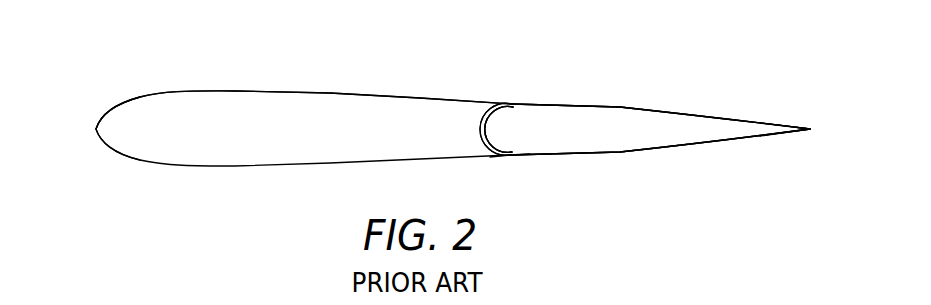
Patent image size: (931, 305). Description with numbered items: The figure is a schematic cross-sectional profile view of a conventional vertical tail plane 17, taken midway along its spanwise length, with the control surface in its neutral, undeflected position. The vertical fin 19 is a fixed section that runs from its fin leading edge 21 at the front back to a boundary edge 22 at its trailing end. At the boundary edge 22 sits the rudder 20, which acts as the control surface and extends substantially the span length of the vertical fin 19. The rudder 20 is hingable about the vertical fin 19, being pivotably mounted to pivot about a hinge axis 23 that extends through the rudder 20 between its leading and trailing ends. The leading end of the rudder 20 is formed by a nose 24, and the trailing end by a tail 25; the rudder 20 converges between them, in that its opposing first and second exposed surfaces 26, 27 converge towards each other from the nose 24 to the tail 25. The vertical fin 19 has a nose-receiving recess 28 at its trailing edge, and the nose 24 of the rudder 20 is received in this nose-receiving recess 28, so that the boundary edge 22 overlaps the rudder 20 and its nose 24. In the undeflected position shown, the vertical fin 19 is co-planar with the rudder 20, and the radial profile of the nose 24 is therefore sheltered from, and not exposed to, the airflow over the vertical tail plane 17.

The vertical tail plane 17 is at (577, 73).
The vertical fin 19 is at (240, 102).
The rudder 20 is at (620, 140).
The fin leading edge 21 is at (96, 129).
The boundary edge 22 is at (510, 156).
The hinge axis 23 is at (516, 126).
The nose 24 is at (511, 123).
The tail 25 is at (793, 127).
The first exposed surface 26 is at (682, 112).
The second exposed surface 27 is at (716, 145).
The nose-receiving recess 28 is at (490, 130).